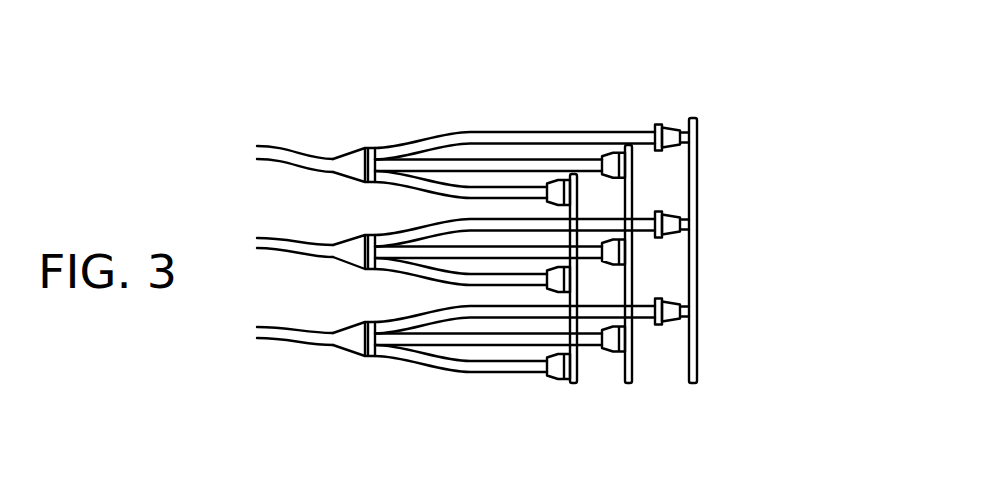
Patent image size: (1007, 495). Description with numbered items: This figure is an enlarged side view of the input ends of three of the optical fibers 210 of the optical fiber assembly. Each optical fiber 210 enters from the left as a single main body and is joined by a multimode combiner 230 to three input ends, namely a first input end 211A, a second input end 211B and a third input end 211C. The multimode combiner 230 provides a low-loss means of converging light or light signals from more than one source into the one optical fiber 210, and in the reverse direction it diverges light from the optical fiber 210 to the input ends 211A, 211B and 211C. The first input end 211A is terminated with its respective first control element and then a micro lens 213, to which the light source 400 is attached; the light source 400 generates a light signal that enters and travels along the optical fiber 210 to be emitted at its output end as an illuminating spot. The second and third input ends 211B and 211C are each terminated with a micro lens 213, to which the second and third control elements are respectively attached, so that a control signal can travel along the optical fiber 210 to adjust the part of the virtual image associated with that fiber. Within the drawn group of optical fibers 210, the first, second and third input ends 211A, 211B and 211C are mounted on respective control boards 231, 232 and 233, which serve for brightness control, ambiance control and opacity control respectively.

The optical fiber 210 is at (278, 338).
The multimode combiner 230 is at (350, 337).
The first input end 211A is at (642, 310).
The second input end 211B is at (590, 340).
The third input end 211C is at (487, 365).
The micro lens 213 is at (660, 322).
The light source 400 is at (680, 137).
The control board 231 is at (697, 375).
The control board 232 is at (632, 377).
The control board 233 is at (573, 385).